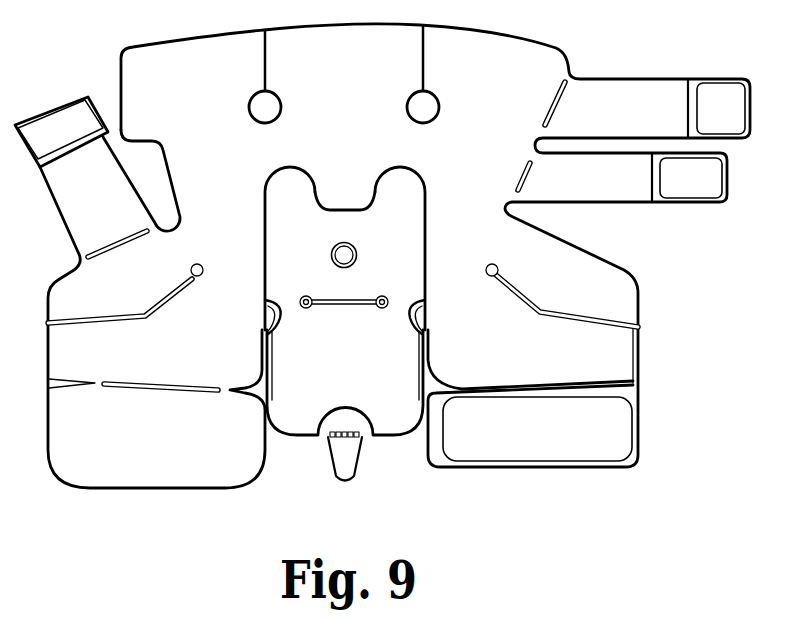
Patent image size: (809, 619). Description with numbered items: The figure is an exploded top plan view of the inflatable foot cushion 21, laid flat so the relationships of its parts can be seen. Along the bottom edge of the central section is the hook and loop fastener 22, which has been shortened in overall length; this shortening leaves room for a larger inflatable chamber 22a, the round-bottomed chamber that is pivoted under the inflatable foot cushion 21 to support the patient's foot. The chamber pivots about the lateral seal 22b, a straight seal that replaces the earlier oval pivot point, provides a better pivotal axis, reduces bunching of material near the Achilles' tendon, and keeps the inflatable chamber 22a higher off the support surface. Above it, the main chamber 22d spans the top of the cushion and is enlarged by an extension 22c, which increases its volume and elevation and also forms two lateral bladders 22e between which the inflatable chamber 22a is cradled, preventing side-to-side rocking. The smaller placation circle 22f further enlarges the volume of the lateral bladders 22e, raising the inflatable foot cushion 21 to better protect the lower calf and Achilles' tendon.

The inflatable foot cushion 21 is at (720, 338).
The hook and loop fastener 22 is at (340, 457).
The inflatable chamber 22a is at (367, 385).
The lateral seal 22b is at (347, 298).
The extension 22c is at (362, 197).
The main chamber 22d is at (368, 122).
The lateral bladders 22e is at (292, 200).
The placation circle 22f is at (344, 255).